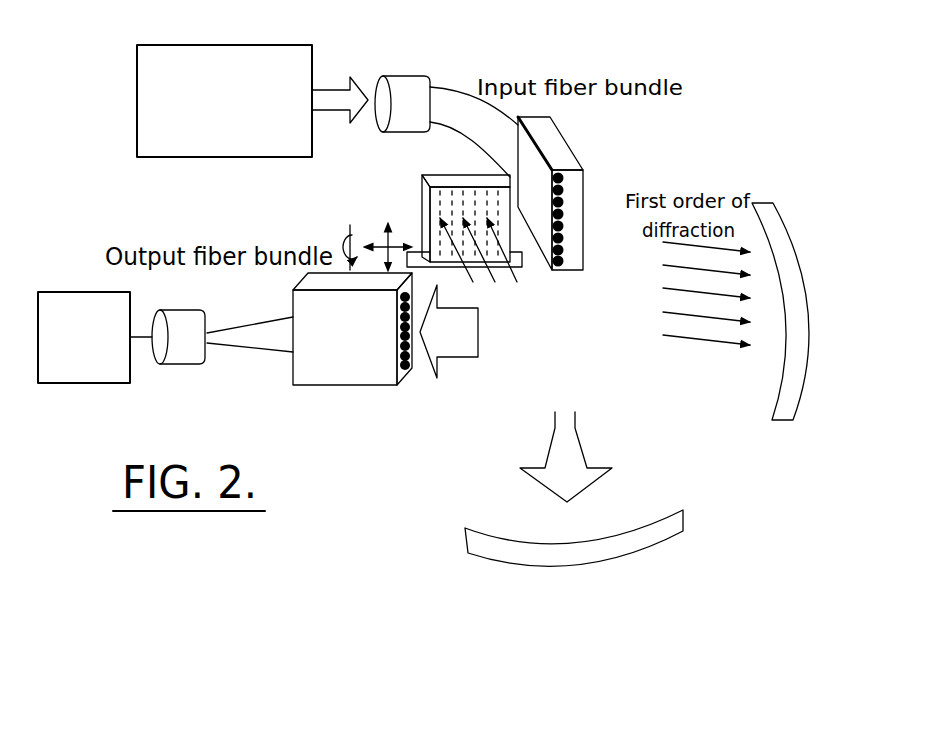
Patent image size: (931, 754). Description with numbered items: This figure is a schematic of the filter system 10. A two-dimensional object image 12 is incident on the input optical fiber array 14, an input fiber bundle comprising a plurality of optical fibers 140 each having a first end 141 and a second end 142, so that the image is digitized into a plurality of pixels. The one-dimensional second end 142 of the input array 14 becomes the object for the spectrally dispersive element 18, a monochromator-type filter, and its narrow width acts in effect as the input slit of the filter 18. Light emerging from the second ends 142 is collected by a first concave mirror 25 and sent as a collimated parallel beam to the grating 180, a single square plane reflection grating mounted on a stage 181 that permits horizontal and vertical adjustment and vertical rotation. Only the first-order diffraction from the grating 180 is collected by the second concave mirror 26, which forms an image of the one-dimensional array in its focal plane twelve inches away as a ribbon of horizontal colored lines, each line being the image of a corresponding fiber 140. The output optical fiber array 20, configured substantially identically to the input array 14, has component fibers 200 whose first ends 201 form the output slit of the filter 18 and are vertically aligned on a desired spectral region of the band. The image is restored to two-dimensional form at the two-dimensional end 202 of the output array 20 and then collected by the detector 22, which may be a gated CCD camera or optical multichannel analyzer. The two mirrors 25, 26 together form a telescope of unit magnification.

The system 10 is at (758, 140).
The two-dimensional object image 12 is at (227, 43).
The input optical fiber array 14 is at (583, 188).
The first end 141 is at (362, 54).
The second end 142 is at (565, 203).
The optical fibers 140 is at (578, 240).
The spectrally dispersive element 18 is at (453, 220).
The grating 180 is at (473, 180).
The stage 181 is at (520, 266).
The output optical fiber array 20 is at (360, 364).
The component fibers 200 is at (313, 375).
The first ends 201 is at (407, 370).
The two-dimensional end 202 is at (158, 358).
The detector 22 is at (95, 384).
The first concave mirror 25 is at (673, 530).
The second concave mirror 26 is at (760, 333).